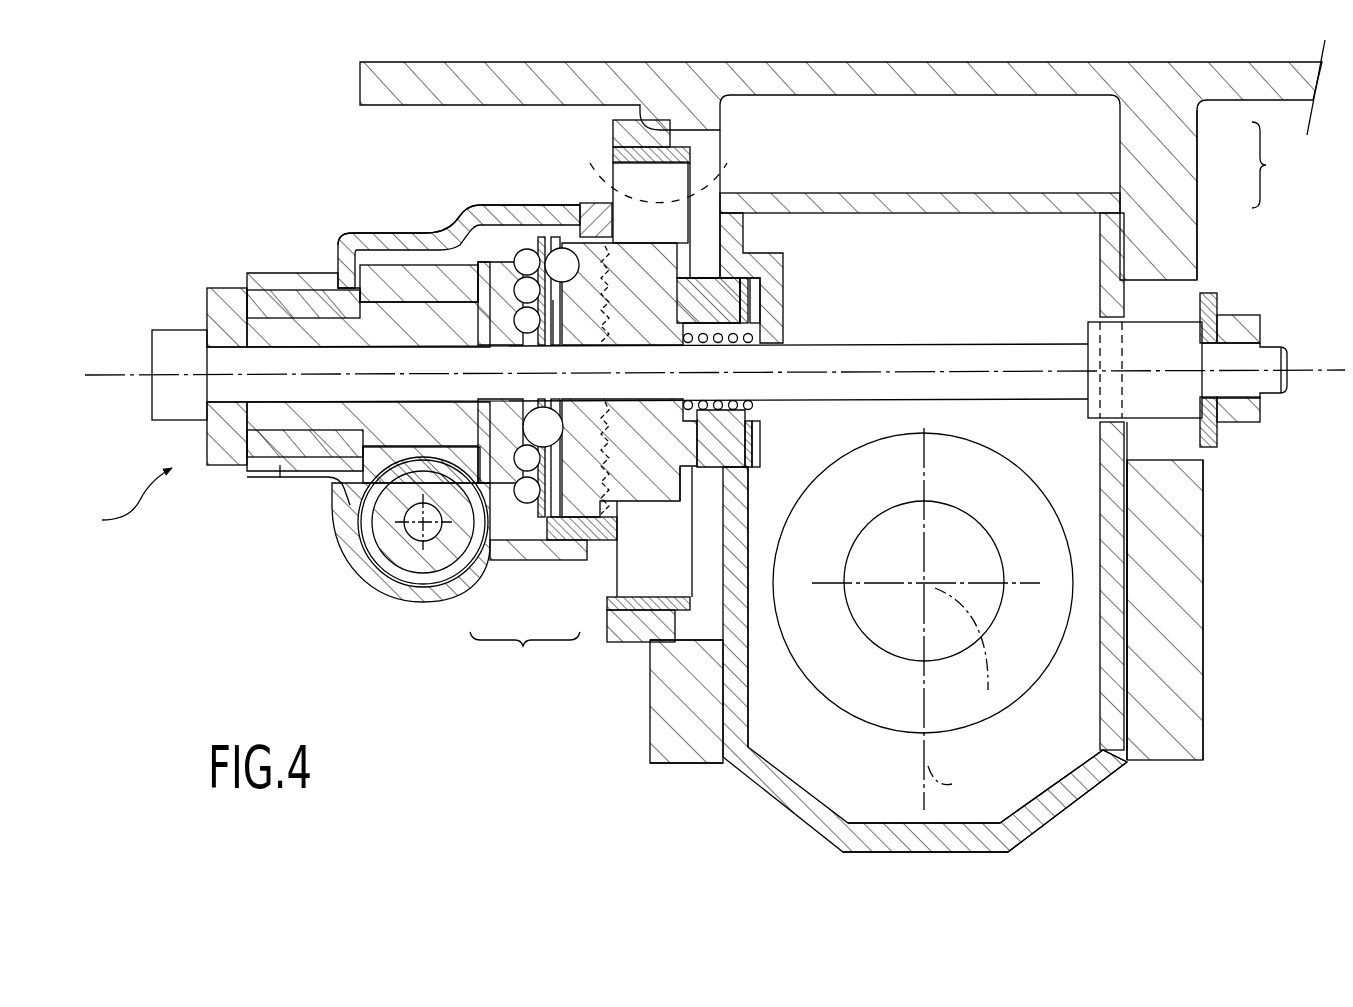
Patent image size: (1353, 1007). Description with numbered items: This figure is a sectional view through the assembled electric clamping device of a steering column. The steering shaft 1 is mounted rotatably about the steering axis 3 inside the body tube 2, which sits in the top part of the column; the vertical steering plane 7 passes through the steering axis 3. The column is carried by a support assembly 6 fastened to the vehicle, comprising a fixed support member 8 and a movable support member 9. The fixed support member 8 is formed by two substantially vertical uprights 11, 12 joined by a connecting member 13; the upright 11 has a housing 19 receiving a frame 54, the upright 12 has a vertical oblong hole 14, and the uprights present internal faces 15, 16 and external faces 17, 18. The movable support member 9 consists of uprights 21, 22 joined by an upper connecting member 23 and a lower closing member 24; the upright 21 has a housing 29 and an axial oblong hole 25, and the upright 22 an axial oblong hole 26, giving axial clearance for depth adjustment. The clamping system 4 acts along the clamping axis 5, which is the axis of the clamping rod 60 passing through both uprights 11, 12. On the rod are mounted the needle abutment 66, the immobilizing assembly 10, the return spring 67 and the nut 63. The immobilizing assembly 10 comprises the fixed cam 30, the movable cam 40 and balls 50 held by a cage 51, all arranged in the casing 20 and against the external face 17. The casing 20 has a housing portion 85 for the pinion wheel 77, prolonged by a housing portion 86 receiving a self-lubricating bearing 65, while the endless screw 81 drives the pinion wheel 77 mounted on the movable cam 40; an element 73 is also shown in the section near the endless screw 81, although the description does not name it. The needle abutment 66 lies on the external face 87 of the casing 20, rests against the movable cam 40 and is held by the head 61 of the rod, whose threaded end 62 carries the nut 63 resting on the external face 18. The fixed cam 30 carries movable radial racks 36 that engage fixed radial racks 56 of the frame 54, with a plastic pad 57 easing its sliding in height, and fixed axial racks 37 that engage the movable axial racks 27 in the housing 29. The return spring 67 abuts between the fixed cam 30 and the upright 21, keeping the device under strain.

The steering shaft 1 is at (888, 658).
The body tube 2 is at (1037, 683).
The steering axis 3 is at (988, 690).
The clamping system 4 is at (128, 502).
The clamping axis 5 is at (152, 355).
The support assembly 6 is at (1267, 165).
The vertical steering plane 7 is at (952, 784).
The fixed support member 8 is at (1200, 212).
The movable support member 9 is at (1078, 182).
The immobilizing assembly 10 is at (525, 656).
The upright 11 is at (680, 765).
The upright 12 is at (1190, 740).
The connecting member 13 is at (920, 75).
The oblong hole 14 is at (1180, 292).
The internal face 15 is at (730, 760).
The internal face 16 is at (1113, 765).
The external face 17 is at (648, 725).
The external face 18 is at (1202, 635).
The housing 19 is at (652, 678).
The casing 20 is at (343, 235).
The upright 21 is at (765, 760).
The upright 22 is at (1140, 678).
The connecting member 23 is at (955, 193).
The closing member 24 is at (815, 825).
The oblong hole 25 is at (785, 412).
The oblong hole 26 is at (1100, 445).
The movable axial racks 27 is at (758, 312).
The housing 29 is at (780, 278).
The fixed cam 30 is at (578, 520).
The movable radial racks 36 is at (603, 230).
The fixed axial racks 37 is at (748, 300).
The movable cam 40 is at (508, 530).
The balls 50 is at (543, 525).
The cage 51 is at (520, 262).
The frame 54 is at (612, 128).
The fixed radial racks 56 is at (715, 165).
The plastic pad 57 is at (605, 640).
The clamping rod 60 is at (285, 300).
The head 61 is at (170, 330).
The threaded end 62 is at (1275, 352).
The nut 63 is at (1240, 325).
The self-lubricating bearing 65 is at (275, 460).
The needle abutment 66 is at (222, 295).
The return spring 67 is at (715, 520).
The roller 73 is at (433, 575).
The pinion wheel 77 is at (437, 275).
The endless screw 81 is at (362, 580).
The housing portion 85 is at (388, 250).
The housing portion 86 is at (292, 478).
The external face 87 is at (225, 465).